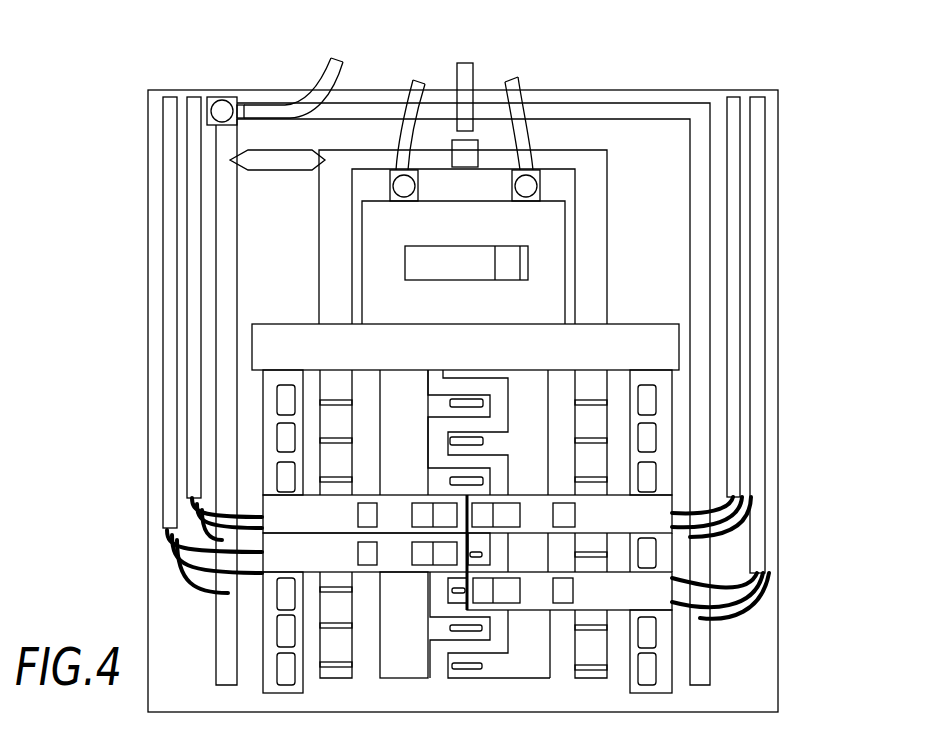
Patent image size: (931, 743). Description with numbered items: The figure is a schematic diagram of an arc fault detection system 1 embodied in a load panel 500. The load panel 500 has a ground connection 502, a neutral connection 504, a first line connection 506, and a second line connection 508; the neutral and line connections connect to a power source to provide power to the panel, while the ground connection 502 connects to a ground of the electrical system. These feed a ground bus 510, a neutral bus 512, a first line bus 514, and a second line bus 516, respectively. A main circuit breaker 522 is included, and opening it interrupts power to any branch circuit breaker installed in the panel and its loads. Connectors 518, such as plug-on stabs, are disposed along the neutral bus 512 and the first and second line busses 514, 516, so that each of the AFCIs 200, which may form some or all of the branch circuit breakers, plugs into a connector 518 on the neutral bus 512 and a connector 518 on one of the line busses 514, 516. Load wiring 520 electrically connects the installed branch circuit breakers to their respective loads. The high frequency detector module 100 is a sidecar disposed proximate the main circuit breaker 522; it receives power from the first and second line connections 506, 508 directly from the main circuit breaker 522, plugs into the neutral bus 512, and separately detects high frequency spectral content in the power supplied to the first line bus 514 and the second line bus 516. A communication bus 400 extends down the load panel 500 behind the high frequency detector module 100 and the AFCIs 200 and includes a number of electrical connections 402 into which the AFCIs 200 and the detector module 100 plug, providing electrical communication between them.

The arc fault detection system 1 is at (129, 59).
The high frequency detector module 100 is at (636, 325).
The AFCIs 200 is at (393, 495).
The communication bus 400 is at (630, 386).
The electrical connections 402 is at (278, 432).
The load panel 500 is at (782, 113).
The ground connection 502 is at (330, 57).
The neutral connection 504 is at (470, 68).
The first line connection 506 is at (419, 80).
The second line connection 508 is at (520, 82).
The ground bus 510 is at (697, 237).
The neutral bus 512 is at (330, 267).
The first line bus 514 is at (400, 660).
The second line bus 516 is at (525, 655).
The connectors 518 is at (600, 675).
The load wiring 520 is at (768, 548).
The main circuit breaker 522 is at (570, 220).